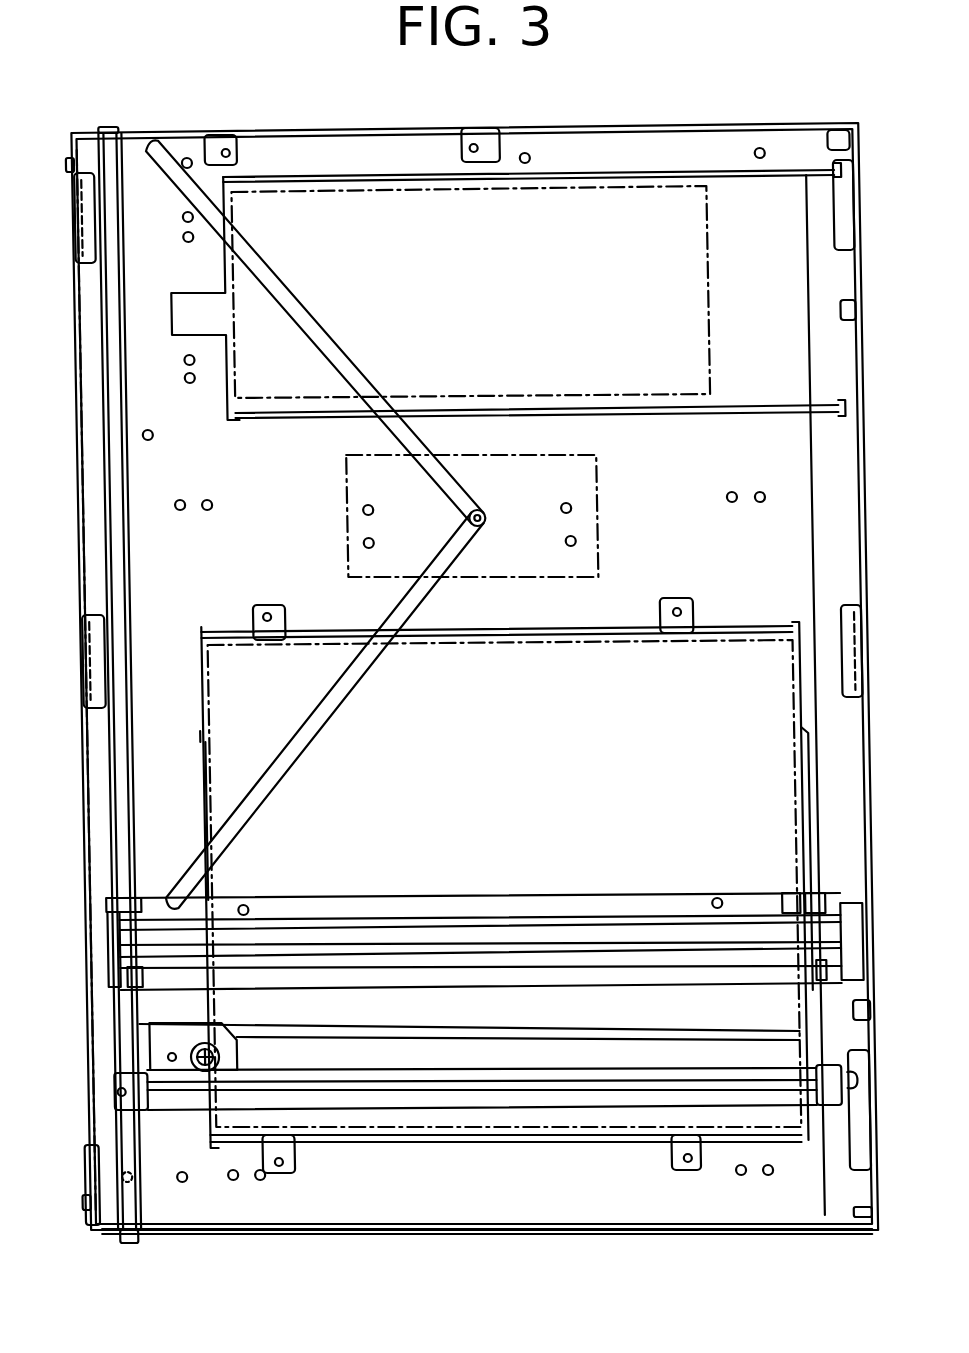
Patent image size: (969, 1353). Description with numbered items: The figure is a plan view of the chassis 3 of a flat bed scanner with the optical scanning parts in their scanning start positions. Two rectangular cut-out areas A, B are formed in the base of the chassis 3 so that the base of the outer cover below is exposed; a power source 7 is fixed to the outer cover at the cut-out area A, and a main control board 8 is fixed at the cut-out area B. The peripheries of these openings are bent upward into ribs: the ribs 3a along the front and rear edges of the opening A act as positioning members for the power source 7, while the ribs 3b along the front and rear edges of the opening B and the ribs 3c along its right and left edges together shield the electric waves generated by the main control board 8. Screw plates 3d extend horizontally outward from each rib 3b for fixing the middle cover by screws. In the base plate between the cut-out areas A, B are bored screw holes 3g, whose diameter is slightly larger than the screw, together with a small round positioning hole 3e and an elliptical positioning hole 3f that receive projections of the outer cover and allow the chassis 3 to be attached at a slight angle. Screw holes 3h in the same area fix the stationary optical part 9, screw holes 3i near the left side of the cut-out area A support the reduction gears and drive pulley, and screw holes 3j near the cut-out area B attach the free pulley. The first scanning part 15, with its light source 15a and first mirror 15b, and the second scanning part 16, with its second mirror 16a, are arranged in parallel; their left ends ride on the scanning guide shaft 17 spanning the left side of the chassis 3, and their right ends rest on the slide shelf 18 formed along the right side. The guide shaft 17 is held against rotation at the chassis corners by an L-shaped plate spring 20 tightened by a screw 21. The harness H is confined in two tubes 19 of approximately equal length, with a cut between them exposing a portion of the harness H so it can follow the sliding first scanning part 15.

The chassis 3 is at (312, 479).
The rib 3a is at (565, 170).
The rib 3b is at (601, 631).
The rib 3c is at (187, 745).
The screw plate 3d is at (257, 605).
The positioning hole 3e is at (171, 499).
The positioning hole 3f is at (753, 492).
The screw hole 3g is at (203, 505).
The screw hole 3h is at (366, 512).
The screw hole 3i is at (180, 232).
The screw hole 3j is at (161, 1172).
The power source 7 is at (703, 270).
The main control board 8 is at (746, 630).
The stationary optical part 9 is at (591, 527).
The first scanning part 15 is at (574, 905).
The light source 15a is at (451, 930).
The first mirror 15b is at (341, 930).
The second scanning part 16 is at (580, 1028).
The second mirror 16a is at (471, 1080).
The scanning guide shaft 17 is at (120, 585).
The slide shelf 18 is at (802, 703).
The tube 19 is at (336, 330).
The plate spring 20 is at (67, 150).
The screw 21 is at (64, 165).
The cut-out area A is at (759, 326).
The cut-out area B is at (526, 790).
The harness H is at (477, 518).